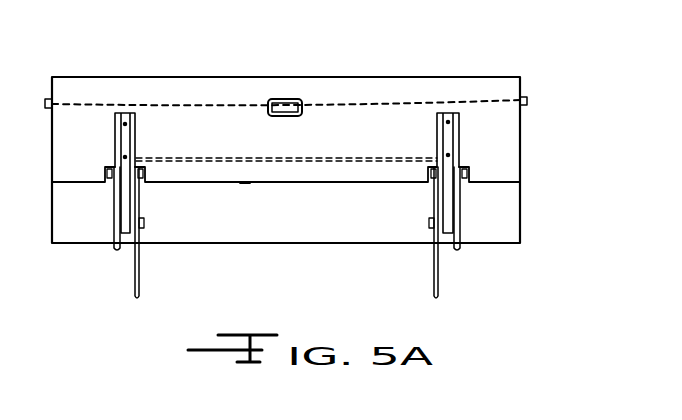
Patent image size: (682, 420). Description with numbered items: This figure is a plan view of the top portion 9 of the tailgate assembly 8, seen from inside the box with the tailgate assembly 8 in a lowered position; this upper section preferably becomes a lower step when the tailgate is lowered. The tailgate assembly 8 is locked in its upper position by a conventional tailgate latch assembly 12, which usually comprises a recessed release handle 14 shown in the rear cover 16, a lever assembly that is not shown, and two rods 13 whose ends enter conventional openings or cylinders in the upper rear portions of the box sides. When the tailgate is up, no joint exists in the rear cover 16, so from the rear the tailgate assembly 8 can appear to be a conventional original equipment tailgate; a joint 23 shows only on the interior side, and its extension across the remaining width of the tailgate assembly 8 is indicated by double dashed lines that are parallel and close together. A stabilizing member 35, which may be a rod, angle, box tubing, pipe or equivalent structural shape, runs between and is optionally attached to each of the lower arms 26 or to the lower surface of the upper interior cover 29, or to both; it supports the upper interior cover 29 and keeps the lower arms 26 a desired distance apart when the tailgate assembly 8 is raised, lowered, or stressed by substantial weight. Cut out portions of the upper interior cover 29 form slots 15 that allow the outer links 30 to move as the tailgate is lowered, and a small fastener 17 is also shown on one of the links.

The tailgate assembly 8 is at (312, 213).
The top portion 9 is at (479, 77).
The tailgate latch assembly 12 is at (302, 98).
The rods 13 is at (187, 103).
The recessed release handle 14 is at (280, 100).
The slots 15 is at (143, 175).
The rear cover 16 is at (497, 206).
The fastener 17 is at (142, 226).
The joint 23 is at (243, 184).
The lower arms 26 is at (128, 138).
The upper interior cover 29 is at (91, 138).
The outer links 30 is at (113, 222).
The stabilizing member 35 is at (310, 161).